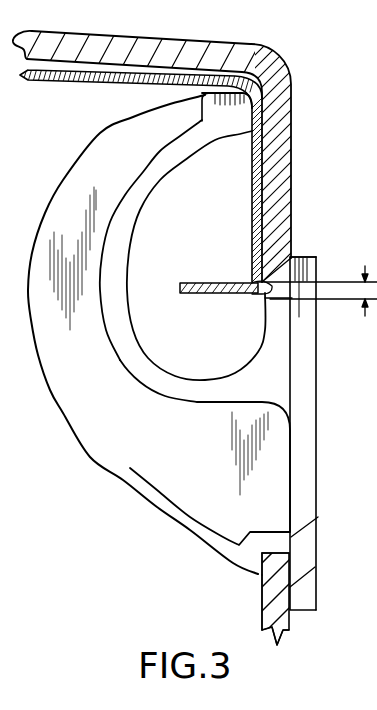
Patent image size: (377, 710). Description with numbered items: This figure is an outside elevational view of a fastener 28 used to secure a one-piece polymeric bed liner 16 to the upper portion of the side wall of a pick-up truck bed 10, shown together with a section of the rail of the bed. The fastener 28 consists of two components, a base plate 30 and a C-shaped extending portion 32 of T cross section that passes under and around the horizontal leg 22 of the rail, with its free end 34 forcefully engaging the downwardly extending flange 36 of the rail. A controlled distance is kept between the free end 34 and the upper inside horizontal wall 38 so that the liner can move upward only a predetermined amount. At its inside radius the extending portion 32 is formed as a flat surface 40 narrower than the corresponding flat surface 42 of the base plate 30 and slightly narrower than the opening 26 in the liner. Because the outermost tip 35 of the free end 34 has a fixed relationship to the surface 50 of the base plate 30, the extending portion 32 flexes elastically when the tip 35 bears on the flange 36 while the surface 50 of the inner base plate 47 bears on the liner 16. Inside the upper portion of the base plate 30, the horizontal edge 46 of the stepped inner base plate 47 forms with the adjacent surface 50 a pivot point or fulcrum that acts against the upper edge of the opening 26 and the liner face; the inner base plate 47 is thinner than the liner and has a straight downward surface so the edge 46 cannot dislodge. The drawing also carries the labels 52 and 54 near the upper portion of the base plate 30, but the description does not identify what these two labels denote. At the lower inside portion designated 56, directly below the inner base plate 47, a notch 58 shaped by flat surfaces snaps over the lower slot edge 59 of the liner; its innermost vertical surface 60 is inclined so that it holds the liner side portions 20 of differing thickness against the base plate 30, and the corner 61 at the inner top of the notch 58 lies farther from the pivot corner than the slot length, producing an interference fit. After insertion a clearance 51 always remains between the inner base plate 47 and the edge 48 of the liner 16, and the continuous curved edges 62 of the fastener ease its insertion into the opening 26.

The bed 10 is at (5, 385).
The bed liner 16 is at (294, 135).
The side portions 20 is at (289, 622).
The horizontal leg 22 is at (182, 292).
The opening 26 is at (246, 318).
The fastener 28 is at (62, 413).
The base plate 30 is at (376, 384).
The extending portion 32 is at (78, 155).
The free end 34 is at (202, 93).
The tip 35 is at (242, 135).
The flange 36 is at (252, 180).
The upper inside horizontal wall 38 is at (57, 80).
The flat surface 40 is at (203, 403).
The flat surface 42 is at (254, 367).
The horizontal edge 46 is at (282, 297).
The inner base plate 47 is at (265, 298).
The edge 48 is at (252, 286).
The surface 50 is at (264, 265).
The clearance 51 is at (363, 283).
The plate top portion 52 is at (309, 257).
The weld 54 is at (304, 257).
The lower inside portion 56 is at (291, 570).
The notch 58 is at (262, 553).
The lower slot edge 59 is at (318, 518).
The inclined surface 60 is at (262, 605).
The corner 61 is at (261, 557).
The curved edges 62 is at (125, 232).